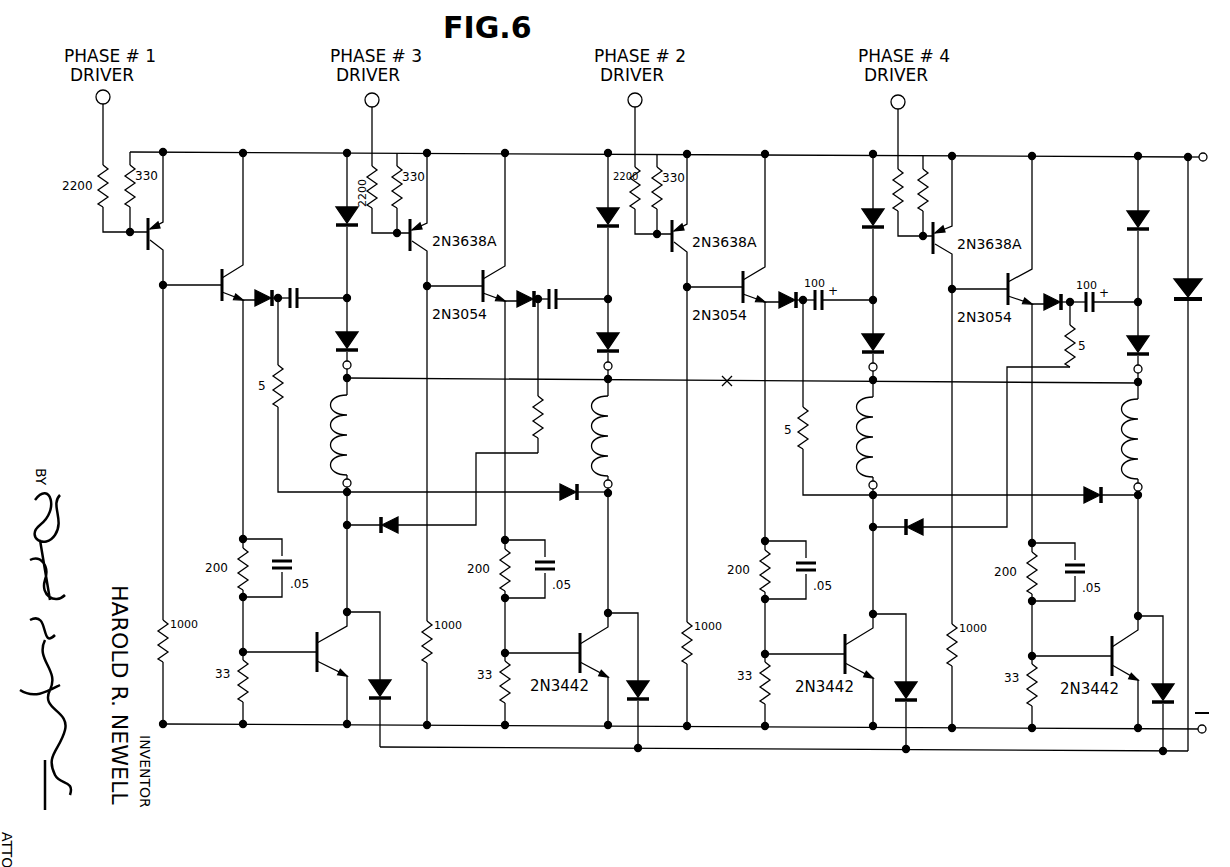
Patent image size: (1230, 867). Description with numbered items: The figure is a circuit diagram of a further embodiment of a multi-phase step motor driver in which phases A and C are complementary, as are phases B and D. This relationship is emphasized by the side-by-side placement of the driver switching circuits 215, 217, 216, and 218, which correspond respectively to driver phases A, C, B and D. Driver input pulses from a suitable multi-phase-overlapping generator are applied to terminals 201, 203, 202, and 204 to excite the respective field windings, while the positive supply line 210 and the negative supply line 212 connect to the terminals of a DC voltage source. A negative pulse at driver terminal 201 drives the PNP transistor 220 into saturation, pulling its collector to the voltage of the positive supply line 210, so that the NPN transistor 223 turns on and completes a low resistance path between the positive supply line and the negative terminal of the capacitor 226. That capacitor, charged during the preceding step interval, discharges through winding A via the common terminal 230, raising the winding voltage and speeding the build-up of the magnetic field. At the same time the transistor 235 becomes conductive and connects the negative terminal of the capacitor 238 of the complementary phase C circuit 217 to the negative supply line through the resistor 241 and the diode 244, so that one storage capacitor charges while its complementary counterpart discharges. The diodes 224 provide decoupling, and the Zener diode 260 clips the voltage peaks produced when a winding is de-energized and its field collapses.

The driver terminal 201 is at (96, 100).
The driver terminal 203 is at (366, 103).
The driver terminal 202 is at (634, 102).
The driver terminal 204 is at (896, 102).
The positive supply line 210 is at (1202, 148).
The negative supply line 212 is at (1203, 735).
The driver switching circuit 215 is at (308, 449).
The driver switching circuit 216 is at (845, 457).
The driver switching circuit 217 is at (573, 461).
The driver switching circuit 218 is at (1074, 471).
The PNP transistor 220 is at (141, 253).
The NPN transistor 223 is at (246, 280).
The diode 224 is at (258, 306).
The capacitor 226 is at (324, 278).
The capacitor 238 is at (578, 275).
The common terminal 230 is at (347, 378).
The transistor 235 is at (316, 630).
The resistor 241 is at (544, 419).
The diode 244 is at (393, 540).
The Zener diode 260 is at (1184, 296).